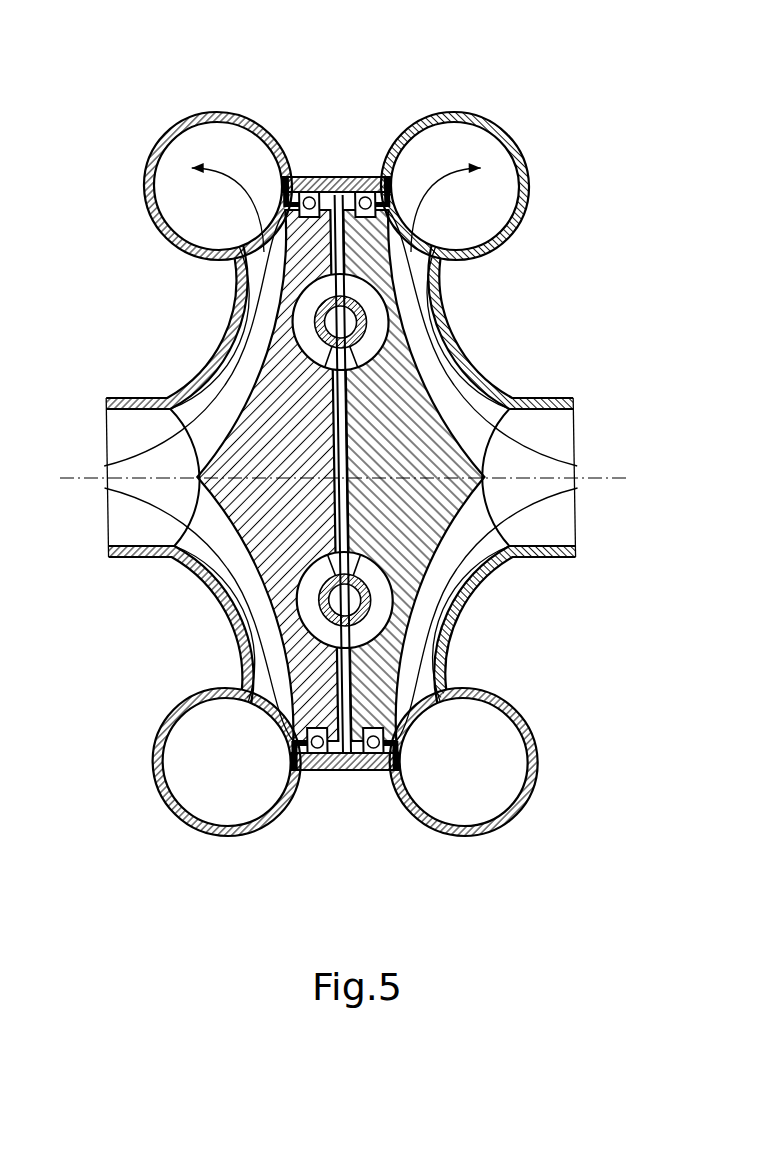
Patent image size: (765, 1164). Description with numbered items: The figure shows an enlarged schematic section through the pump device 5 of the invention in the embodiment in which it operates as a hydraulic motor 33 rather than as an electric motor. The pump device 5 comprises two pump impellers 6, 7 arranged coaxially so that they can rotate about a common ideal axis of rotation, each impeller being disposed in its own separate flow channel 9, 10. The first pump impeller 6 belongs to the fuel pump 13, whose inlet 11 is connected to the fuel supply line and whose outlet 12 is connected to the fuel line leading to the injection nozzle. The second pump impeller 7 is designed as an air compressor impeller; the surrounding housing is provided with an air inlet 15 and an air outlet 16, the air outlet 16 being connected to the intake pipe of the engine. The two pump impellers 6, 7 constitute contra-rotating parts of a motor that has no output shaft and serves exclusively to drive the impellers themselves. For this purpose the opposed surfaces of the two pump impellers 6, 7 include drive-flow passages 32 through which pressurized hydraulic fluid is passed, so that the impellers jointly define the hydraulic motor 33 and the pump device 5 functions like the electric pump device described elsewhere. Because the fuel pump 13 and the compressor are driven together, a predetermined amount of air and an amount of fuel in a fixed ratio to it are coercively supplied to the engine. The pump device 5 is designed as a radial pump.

The pump device 5 is at (347, 773).
The first pump impeller 6 is at (394, 425).
The second pump impeller 7 is at (281, 399).
The flow channel 9 is at (414, 657).
The flow channel 10 is at (257, 301).
The inlet 11 is at (566, 428).
The outlet 12 is at (503, 133).
The fuel pump 13 is at (503, 384).
The air inlet 15 is at (131, 433).
The air outlet 16 is at (172, 130).
The drive-flow passages 32 is at (300, 332).
The hydraulic motor 33 is at (347, 177).